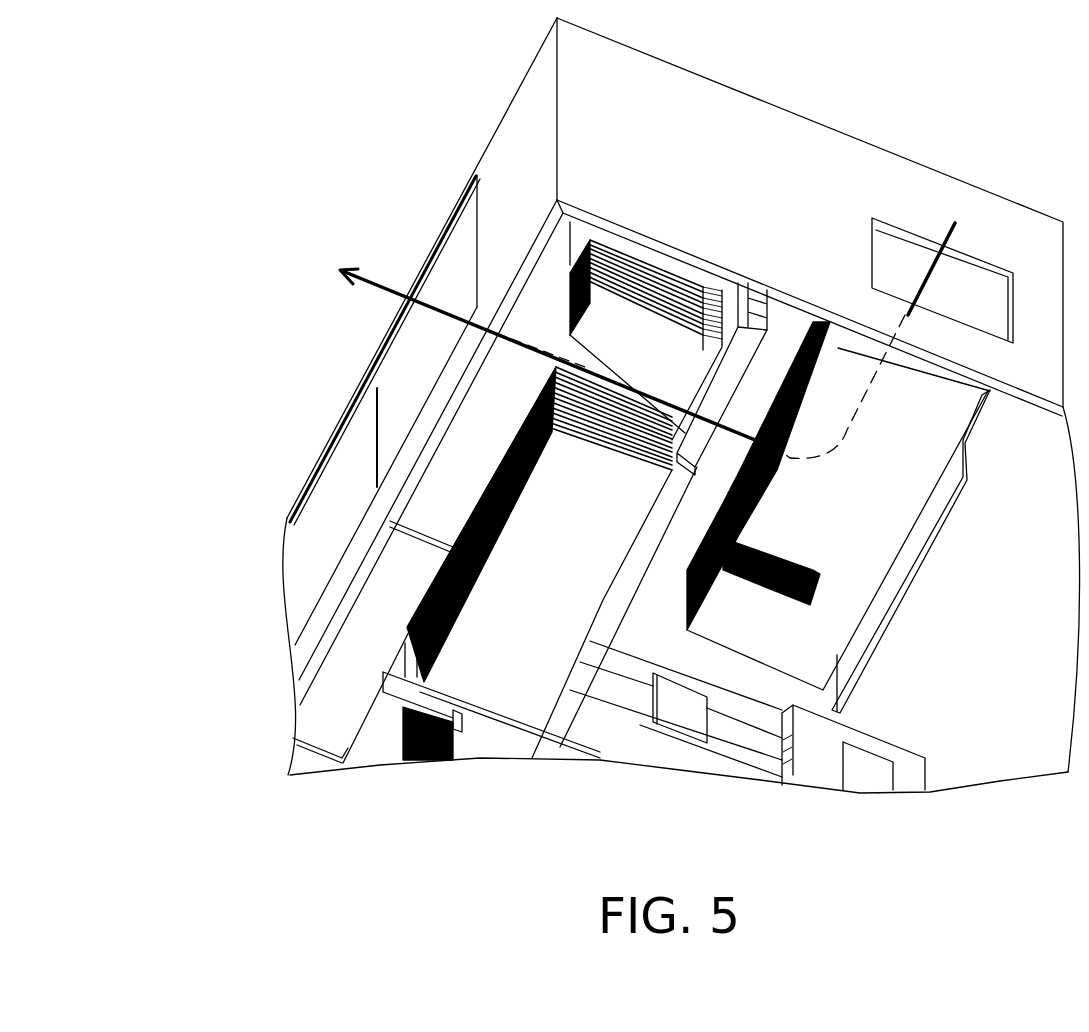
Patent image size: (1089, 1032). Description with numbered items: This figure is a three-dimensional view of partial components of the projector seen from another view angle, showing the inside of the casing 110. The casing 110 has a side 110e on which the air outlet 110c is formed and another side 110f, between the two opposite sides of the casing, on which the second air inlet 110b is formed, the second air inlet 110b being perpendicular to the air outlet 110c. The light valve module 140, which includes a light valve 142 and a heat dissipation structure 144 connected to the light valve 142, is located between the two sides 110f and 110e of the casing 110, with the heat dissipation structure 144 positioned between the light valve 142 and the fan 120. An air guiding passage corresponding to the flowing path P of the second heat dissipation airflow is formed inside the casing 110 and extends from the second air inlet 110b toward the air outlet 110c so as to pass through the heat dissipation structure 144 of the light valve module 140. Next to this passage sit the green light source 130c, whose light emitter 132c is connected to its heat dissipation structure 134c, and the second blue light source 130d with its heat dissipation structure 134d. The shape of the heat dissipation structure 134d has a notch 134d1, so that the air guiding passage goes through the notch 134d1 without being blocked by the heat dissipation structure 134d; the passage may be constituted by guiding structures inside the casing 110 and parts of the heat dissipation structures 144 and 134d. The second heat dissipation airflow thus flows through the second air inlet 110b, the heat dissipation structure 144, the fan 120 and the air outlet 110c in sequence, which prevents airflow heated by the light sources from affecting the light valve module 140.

The casing 110 is at (827, 157).
The side of the casing 110e is at (522, 160).
The side of the casing 110f is at (718, 178).
The second air inlet 110b is at (903, 228).
The air outlet 110c is at (346, 555).
The flowing path P is at (930, 267).
The fan 120 is at (351, 450).
The notch 134d1 is at (612, 356).
The heat dissipation structure 134d is at (490, 675).
The second blue light source 130d is at (507, 606).
The light valve module 140 is at (878, 517).
The light valve 142 is at (893, 583).
The heat dissipation structure 144 is at (887, 527).
The green light source 130c is at (747, 767).
The heat dissipation structure 134c is at (608, 697).
The light emitter 132c is at (675, 717).